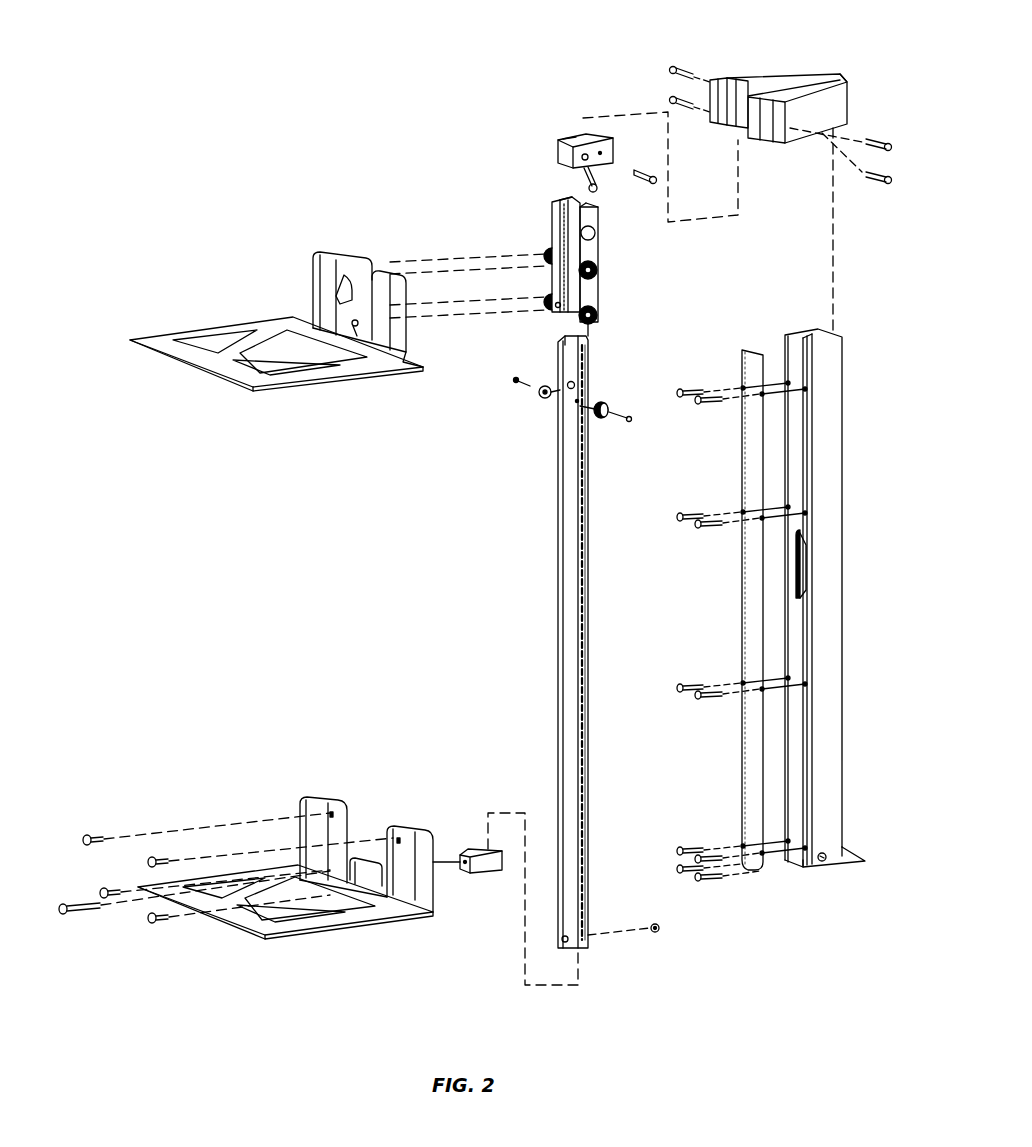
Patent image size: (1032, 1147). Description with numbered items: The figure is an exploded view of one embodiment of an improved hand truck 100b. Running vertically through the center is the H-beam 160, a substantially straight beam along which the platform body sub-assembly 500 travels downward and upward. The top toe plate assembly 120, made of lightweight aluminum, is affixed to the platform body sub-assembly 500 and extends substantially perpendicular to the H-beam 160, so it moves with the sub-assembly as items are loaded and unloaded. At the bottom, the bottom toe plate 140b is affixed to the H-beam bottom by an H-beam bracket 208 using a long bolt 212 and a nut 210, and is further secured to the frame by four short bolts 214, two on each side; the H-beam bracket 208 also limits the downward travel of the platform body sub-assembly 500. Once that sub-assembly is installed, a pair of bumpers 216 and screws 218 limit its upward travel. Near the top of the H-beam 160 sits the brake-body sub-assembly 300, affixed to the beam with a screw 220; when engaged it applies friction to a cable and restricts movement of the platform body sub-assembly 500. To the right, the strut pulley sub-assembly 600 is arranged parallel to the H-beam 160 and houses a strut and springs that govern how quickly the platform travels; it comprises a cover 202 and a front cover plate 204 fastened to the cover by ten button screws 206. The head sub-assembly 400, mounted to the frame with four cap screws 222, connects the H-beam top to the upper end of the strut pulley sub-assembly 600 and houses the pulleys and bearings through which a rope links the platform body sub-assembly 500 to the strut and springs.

The hand truck 100b is at (308, 103).
The top toe plate assembly 120 is at (305, 389).
The bottom toe plate 140b is at (308, 937).
The H-beam 160 is at (556, 641).
The cover 202 is at (843, 735).
The front cover plate 204 is at (766, 880).
The button screws 206 is at (695, 882).
The H-beam bracket 208 is at (477, 877).
The nut 210 is at (652, 938).
The long bolt 212 is at (84, 916).
The short bolts 214 is at (158, 929).
The bumpers 216 is at (540, 399).
The screws 218 is at (512, 384).
The screw 220 is at (642, 165).
The cap screws 222 is at (682, 65).
The brake-body sub-assembly 300 is at (566, 130).
The head sub-assembly 400 is at (803, 70).
The platform body sub-assembly 500 is at (552, 198).
The strut pulley sub-assembly 600 is at (844, 624).